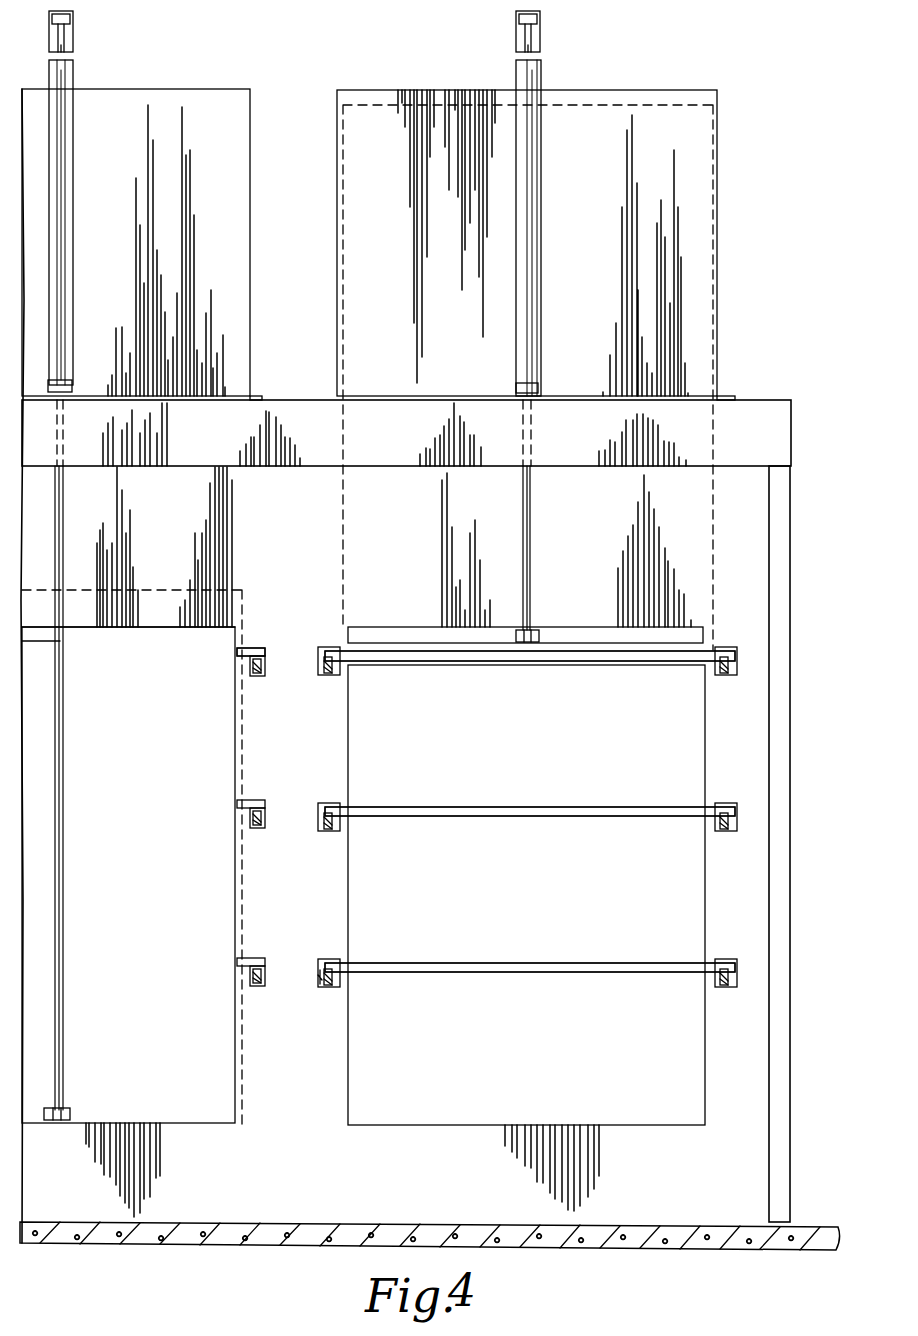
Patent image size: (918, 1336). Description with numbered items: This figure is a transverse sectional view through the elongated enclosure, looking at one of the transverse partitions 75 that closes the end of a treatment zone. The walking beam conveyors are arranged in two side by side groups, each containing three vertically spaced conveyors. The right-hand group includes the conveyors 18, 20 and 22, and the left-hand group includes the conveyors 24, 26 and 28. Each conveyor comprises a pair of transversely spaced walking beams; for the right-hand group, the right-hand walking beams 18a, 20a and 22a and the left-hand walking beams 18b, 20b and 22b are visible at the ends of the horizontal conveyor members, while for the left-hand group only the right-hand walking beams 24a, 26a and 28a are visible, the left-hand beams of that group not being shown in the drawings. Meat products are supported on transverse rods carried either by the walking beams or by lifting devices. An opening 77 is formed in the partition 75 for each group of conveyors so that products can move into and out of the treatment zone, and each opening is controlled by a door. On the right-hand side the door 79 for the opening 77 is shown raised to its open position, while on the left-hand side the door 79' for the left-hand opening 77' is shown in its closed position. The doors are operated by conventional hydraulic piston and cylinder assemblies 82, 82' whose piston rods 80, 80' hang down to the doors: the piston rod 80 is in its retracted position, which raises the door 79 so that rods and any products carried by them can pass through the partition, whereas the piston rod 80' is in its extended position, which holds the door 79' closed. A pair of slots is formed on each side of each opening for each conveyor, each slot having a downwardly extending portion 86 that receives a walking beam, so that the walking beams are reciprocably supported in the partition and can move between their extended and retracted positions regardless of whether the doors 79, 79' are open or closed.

The walking beam conveyor 18 is at (546, 671).
The right-hand walking beam 18a is at (732, 675).
The left-hand walking beam 18b is at (328, 674).
The walking beam conveyor 20 is at (556, 820).
The right-hand walking beam 20a is at (733, 823).
The left-hand walking beam 20b is at (333, 829).
The walking beam conveyor 22 is at (519, 977).
The right-hand walking beam 22a is at (733, 978).
The left-hand walking beam 22b is at (334, 986).
The walking beam conveyor 24 is at (256, 647).
The right-hand walking beam 24a is at (255, 672).
The walking beam conveyor 26 is at (251, 799).
The right-hand walking beam 26a is at (256, 826).
The walking beam conveyor 28 is at (247, 957).
The right-hand walking beam 28a is at (255, 985).
The transverse partition 75 is at (755, 527).
The opening 77 is at (526, 926).
The opening 77' is at (128, 907).
The right-hand door 79 is at (525, 664).
The left-hand door 79' is at (128, 598).
The piston rod 80 is at (553, 351).
The piston rod 80' is at (89, 590).
The hydraulic piston and cylinder assembly 82 is at (562, 31).
The hydraulic piston and cylinder assembly 82' is at (97, 31).
The downwardly extending portion 86 is at (318, 979).